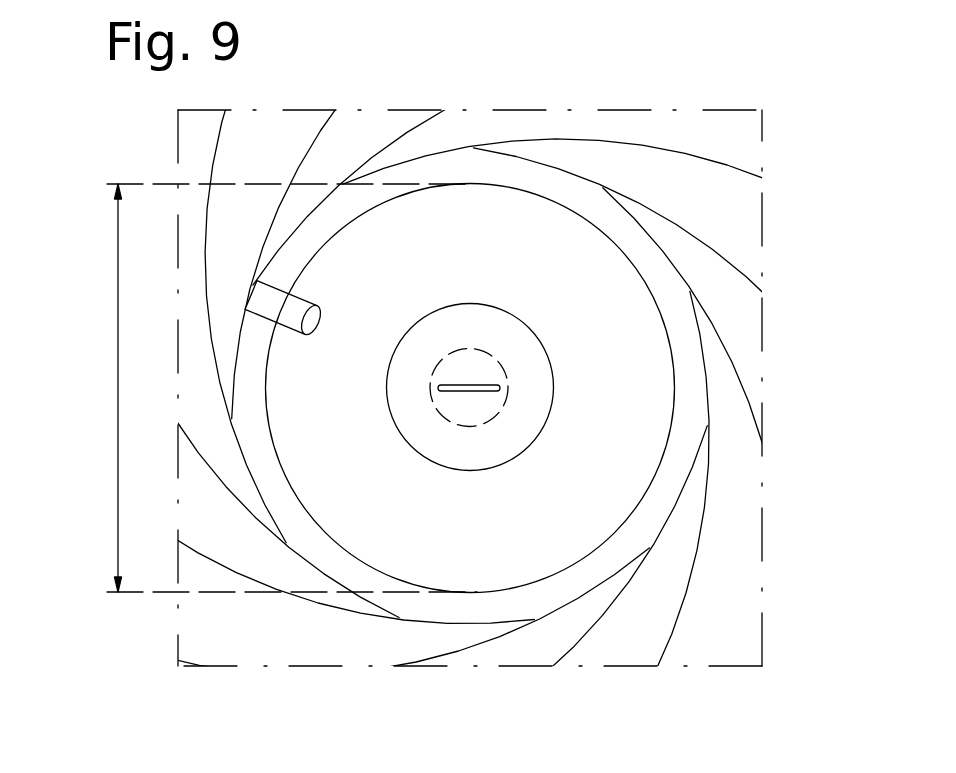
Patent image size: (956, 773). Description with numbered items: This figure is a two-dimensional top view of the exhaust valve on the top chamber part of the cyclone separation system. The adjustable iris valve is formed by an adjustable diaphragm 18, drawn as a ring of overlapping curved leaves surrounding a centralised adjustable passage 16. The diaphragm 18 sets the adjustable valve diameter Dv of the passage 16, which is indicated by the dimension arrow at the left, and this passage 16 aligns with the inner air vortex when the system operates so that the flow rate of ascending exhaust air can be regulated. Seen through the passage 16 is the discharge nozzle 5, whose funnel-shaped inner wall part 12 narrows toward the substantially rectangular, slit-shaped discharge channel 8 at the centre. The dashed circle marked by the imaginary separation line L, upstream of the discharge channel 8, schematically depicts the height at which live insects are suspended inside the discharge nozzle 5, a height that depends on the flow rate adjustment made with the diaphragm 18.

The adjustable diaphragm 18 is at (733, 198).
The centralised adjustable passage 16 is at (635, 437).
The discharge nozzle 5 is at (553, 363).
The inner wall part 12 is at (415, 438).
The discharge channel 8 is at (477, 385).
The imaginary separation line L is at (503, 383).
The adjustable valve diameter DV is at (118, 388).